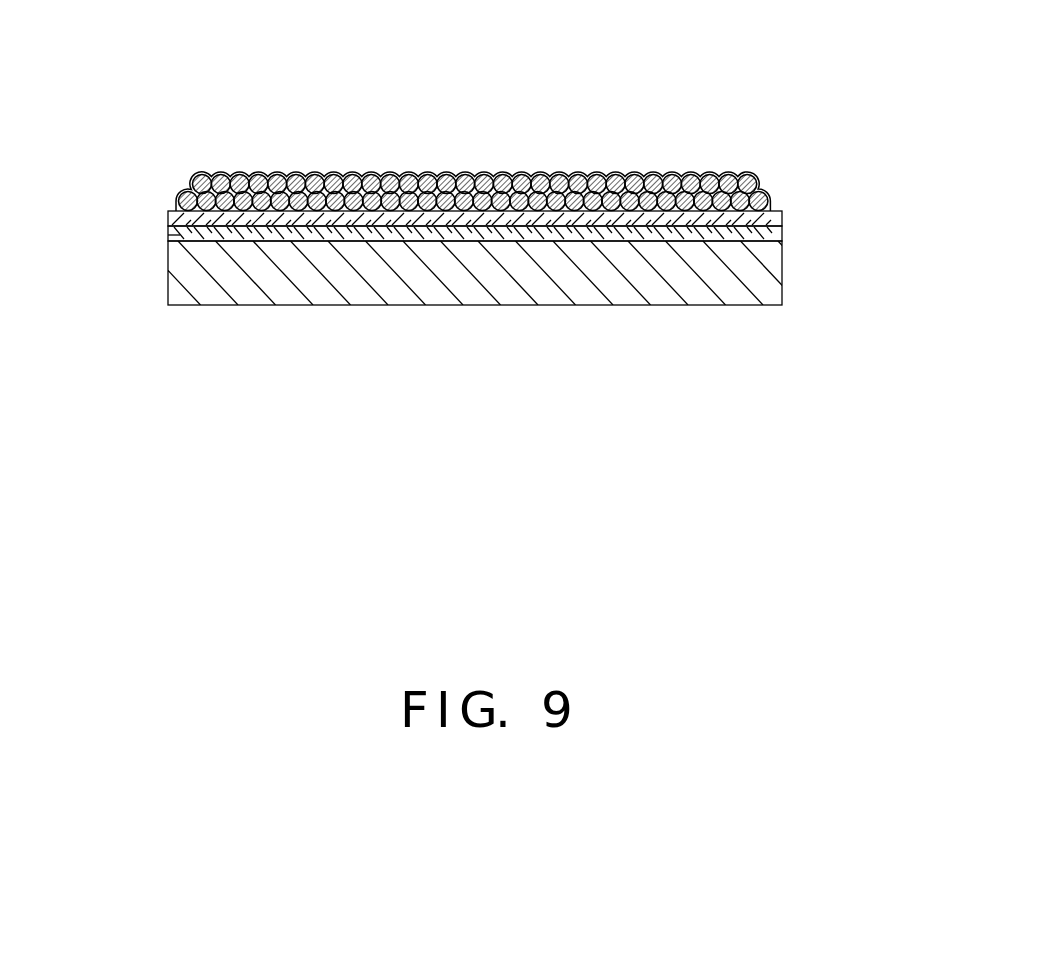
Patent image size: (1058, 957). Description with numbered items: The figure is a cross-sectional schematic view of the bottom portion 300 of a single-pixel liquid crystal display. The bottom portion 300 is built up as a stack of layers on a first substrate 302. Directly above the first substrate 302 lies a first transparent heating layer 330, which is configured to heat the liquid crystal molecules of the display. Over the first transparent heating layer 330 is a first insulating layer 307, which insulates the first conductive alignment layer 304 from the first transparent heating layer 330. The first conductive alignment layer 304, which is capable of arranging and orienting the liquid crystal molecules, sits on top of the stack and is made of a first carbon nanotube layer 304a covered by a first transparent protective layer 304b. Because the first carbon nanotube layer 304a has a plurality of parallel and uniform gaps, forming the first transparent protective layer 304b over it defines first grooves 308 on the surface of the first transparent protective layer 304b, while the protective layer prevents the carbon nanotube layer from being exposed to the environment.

The bottom portion 300 is at (466, 48).
The first substrate 302 is at (770, 268).
The first conductive alignment layer 304 is at (559, 181).
The first carbon nanotube layer 304a is at (784, 211).
The first transparent protective layer 304b is at (748, 173).
The first insulating layer 307 is at (783, 229).
The first grooves 308 is at (643, 173).
The first transparent heating layer 330 is at (178, 235).